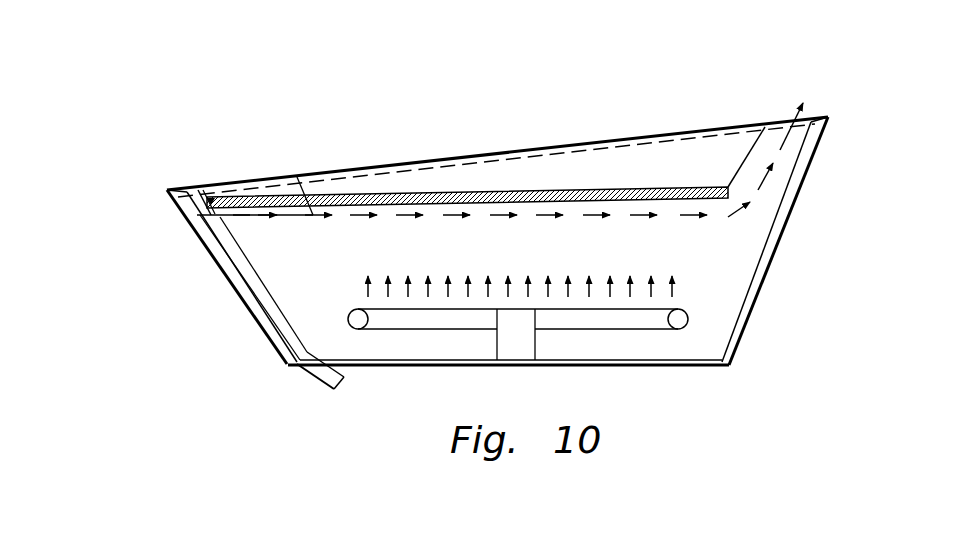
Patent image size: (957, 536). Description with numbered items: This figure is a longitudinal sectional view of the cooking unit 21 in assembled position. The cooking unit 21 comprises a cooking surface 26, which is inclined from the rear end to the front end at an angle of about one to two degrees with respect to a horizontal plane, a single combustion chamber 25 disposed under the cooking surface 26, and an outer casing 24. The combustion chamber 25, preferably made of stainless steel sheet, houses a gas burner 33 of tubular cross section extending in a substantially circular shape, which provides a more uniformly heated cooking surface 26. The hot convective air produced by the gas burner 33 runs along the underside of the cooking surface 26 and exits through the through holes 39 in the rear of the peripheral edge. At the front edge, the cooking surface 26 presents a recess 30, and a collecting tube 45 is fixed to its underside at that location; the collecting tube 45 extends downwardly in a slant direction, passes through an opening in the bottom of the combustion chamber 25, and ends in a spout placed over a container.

The cooking unit 21 is at (128, 186).
The outer casing 24 is at (232, 290).
The combustion chamber 25 is at (778, 243).
The cooking surface 26 is at (523, 189).
The recess 30 is at (226, 201).
The gas burner 33 is at (689, 318).
The through holes 39 is at (789, 124).
The collecting tube 45 is at (263, 322).